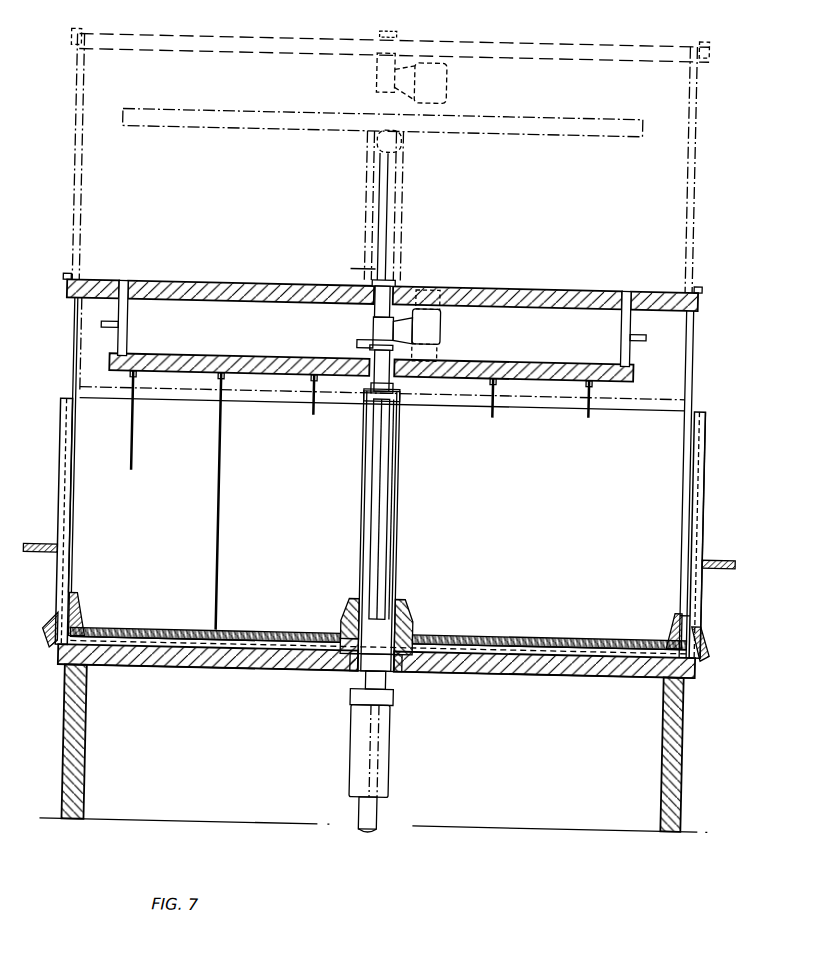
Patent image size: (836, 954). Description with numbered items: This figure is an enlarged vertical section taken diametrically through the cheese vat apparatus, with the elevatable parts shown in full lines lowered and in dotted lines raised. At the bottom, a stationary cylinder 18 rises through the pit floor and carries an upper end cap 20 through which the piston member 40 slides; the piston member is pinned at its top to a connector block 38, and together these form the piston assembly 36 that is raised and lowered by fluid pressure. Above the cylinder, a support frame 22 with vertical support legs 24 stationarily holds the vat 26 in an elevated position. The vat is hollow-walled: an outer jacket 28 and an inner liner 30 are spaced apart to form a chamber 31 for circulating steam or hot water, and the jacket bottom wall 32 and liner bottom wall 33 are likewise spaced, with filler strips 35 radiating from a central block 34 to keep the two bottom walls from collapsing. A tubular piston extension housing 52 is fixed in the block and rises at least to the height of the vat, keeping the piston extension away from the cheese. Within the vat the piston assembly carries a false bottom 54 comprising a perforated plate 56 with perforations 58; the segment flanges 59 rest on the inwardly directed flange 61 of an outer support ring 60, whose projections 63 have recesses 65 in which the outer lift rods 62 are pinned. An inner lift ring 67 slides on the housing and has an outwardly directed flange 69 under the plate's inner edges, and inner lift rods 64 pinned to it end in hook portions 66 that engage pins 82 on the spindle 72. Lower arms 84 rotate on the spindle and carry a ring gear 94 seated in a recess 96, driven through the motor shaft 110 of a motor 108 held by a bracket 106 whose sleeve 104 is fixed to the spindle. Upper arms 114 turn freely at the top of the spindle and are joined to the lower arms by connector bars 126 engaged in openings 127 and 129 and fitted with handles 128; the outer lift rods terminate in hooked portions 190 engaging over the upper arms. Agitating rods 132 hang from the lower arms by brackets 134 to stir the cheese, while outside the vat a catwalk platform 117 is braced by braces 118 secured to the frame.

The cylinder 18 is at (396, 760).
The upper end cap 20 is at (400, 700).
The support frame 22 is at (500, 679).
The support legs 24 is at (668, 760).
The vat 26 is at (710, 430).
The outer side wall or jacket 28 is at (704, 462).
The inner side wall or liner 30 is at (684, 470).
The chamber 31 is at (705, 528).
The bottom wall of jacket 32 is at (555, 673).
The bottom wall of liner 33 is at (585, 645).
The block 34 is at (405, 672).
The filler pieces or strips 35 is at (212, 650).
The piston assembly 36 is at (401, 203).
The connector block 38 is at (372, 715).
The piston member 40 is at (370, 828).
The piston extension housing 52 is at (366, 556).
The false bottom 54 is at (611, 408).
The plate 56 is at (528, 398).
The perforations 58 is at (556, 636).
The flanges 59 is at (88, 635).
The outer support ring 60 is at (683, 390).
The inwardly directed flange 61 is at (668, 640).
The outer lift rods 62 is at (75, 165).
The projections 63 is at (80, 600).
The inner lift rods 64 is at (374, 206).
The recesses 65 is at (695, 609).
The hook portions 66 is at (372, 398).
The inner lift ring 67 is at (352, 625).
The outwardly directed flange 69 is at (348, 640).
The spindle or standard 72 is at (362, 270).
The pins 82 is at (397, 424).
The lower arms 84 is at (587, 132).
The ring gear 94 is at (412, 342).
The recess 96 is at (355, 345).
The sleeve 104 is at (370, 328).
The bracket 106 is at (400, 300).
The motor 108 is at (440, 83).
The motor shaft 110 is at (428, 362).
The upper arms 114 is at (633, 58).
The platform 117 is at (38, 552).
The braces 118 is at (50, 636).
The connector bars 126 is at (126, 334).
The openings in lower arms 127 is at (125, 361).
The handles 128 is at (115, 331).
The openings in upper arms 129 is at (120, 287).
The agitating rods 132 is at (491, 380).
The brackets 134 is at (219, 400).
The hooked portions 190 is at (62, 283).